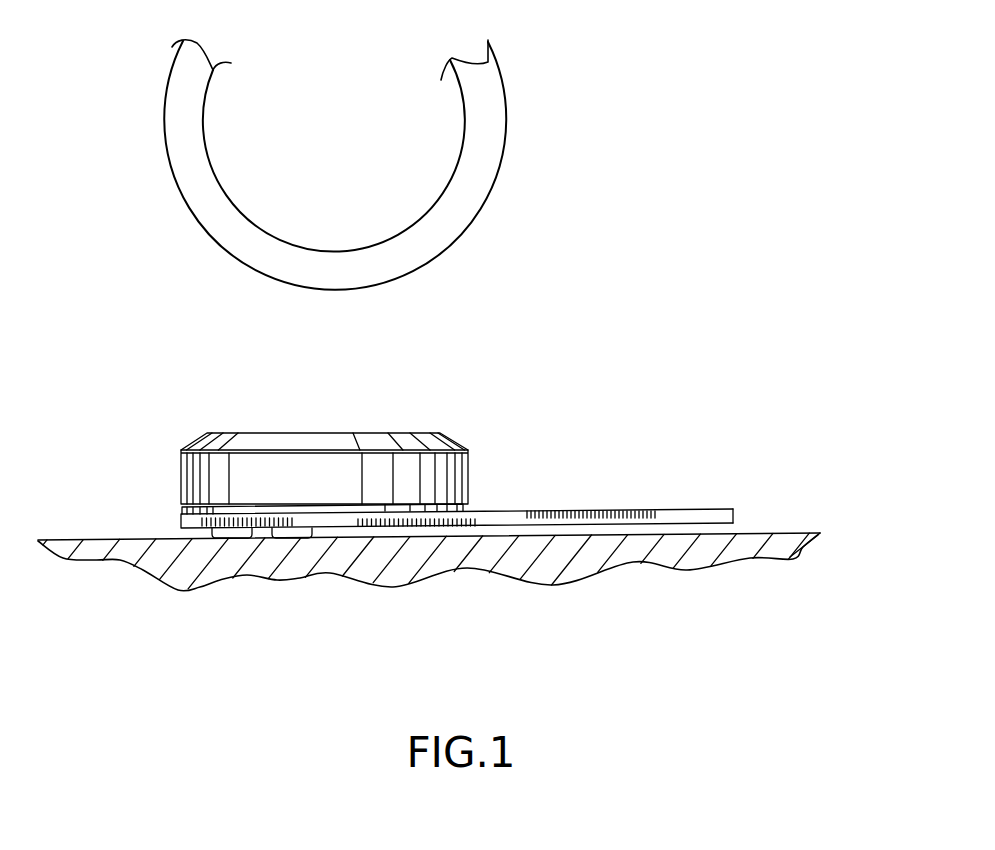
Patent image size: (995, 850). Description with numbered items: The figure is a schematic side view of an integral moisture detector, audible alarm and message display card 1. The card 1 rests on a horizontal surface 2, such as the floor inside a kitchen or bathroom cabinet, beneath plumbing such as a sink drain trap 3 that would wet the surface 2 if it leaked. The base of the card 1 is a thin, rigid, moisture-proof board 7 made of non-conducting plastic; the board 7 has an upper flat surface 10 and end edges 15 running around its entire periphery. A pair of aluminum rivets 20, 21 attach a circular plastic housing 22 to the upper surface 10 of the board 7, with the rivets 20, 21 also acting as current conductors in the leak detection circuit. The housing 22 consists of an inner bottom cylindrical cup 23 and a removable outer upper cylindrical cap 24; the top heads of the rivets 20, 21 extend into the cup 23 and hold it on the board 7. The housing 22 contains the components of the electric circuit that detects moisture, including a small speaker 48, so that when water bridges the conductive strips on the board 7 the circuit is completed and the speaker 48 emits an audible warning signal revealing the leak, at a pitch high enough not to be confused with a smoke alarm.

The integral moisture detector, audible alarm and message display card 1 is at (459, 491).
The horizontal surface 2 is at (803, 533).
The sink drain trap 3 is at (457, 212).
The board 7 is at (718, 509).
The upper flat surface 10 is at (550, 511).
The end edges 15 is at (737, 518).
The rivet 20 is at (220, 537).
The rivet 21 is at (283, 537).
The housing 22 is at (340, 403).
The cup 23 is at (183, 510).
The cap 24 is at (181, 471).
The speaker 48 is at (438, 432).